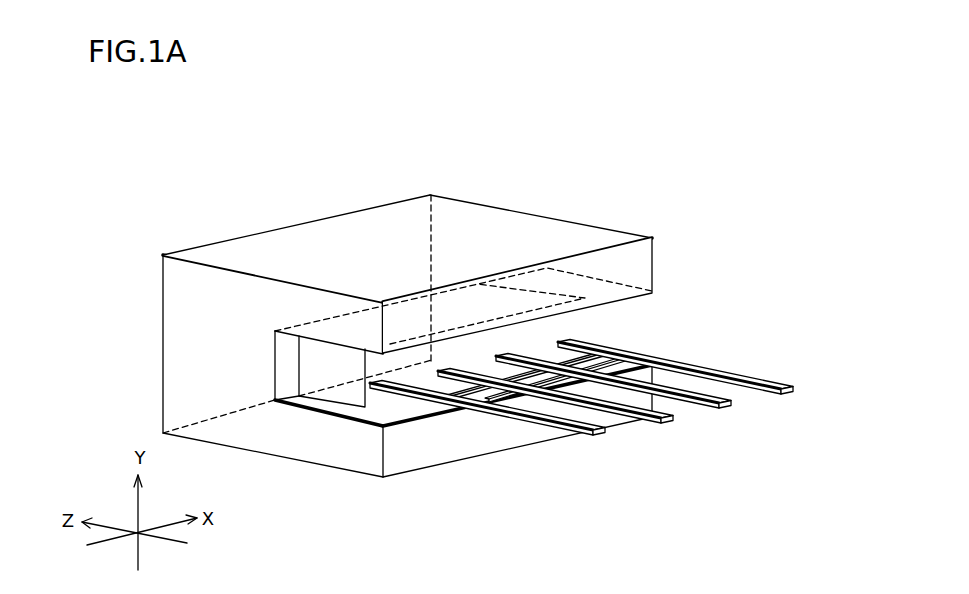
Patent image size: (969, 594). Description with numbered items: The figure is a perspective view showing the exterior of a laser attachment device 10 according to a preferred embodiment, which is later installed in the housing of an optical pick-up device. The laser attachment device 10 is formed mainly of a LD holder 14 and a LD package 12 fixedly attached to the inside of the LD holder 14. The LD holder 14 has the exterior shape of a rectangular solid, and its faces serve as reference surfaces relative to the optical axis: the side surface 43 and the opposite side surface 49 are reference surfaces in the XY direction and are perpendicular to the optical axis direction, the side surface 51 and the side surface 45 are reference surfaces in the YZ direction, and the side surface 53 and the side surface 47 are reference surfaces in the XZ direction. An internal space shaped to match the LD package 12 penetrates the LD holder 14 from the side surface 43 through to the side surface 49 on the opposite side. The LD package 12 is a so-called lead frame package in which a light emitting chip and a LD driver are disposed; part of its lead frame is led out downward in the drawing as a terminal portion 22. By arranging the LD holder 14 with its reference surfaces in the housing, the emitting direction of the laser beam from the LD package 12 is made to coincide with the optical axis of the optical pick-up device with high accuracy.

The laser attachment device 10 is at (455, 320).
The LD package 12 is at (579, 346).
The LD holder 14 is at (430, 193).
The terminal portion 22 is at (788, 395).
The side surface 43 is at (283, 262).
The side surface 45 is at (520, 238).
The side surface 47 is at (314, 437).
The side surface 49 is at (590, 291).
The side surface 51 is at (197, 352).
The side surface 53 is at (356, 254).